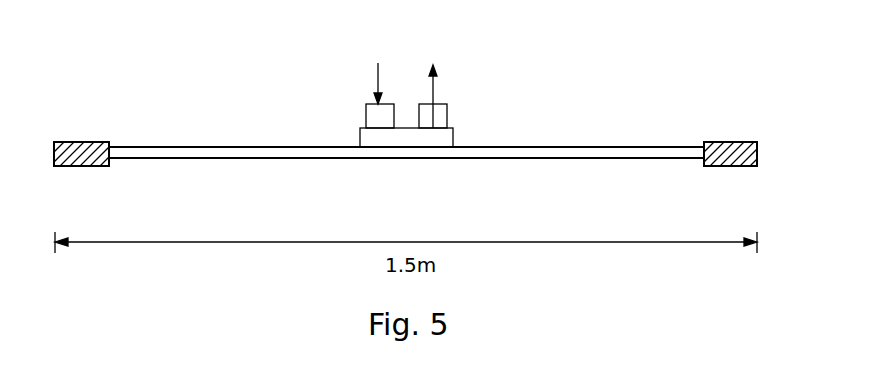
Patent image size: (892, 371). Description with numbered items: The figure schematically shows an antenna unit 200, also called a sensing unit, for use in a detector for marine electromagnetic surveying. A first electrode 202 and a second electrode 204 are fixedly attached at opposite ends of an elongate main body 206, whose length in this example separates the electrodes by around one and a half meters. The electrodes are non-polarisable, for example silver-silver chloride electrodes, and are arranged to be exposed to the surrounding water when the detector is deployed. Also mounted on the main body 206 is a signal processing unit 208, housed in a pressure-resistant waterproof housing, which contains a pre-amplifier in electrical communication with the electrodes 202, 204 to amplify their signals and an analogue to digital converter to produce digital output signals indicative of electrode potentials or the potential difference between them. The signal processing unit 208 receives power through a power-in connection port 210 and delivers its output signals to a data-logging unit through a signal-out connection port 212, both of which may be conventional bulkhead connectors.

The antenna unit 200 is at (637, 69).
The first electrode 202 is at (90, 142).
The second electrode 204 is at (732, 141).
The main body 206 is at (305, 160).
The signal processing unit 208 is at (453, 140).
The power-in connection port 210 is at (366, 117).
The signal-out connection port 212 is at (447, 112).